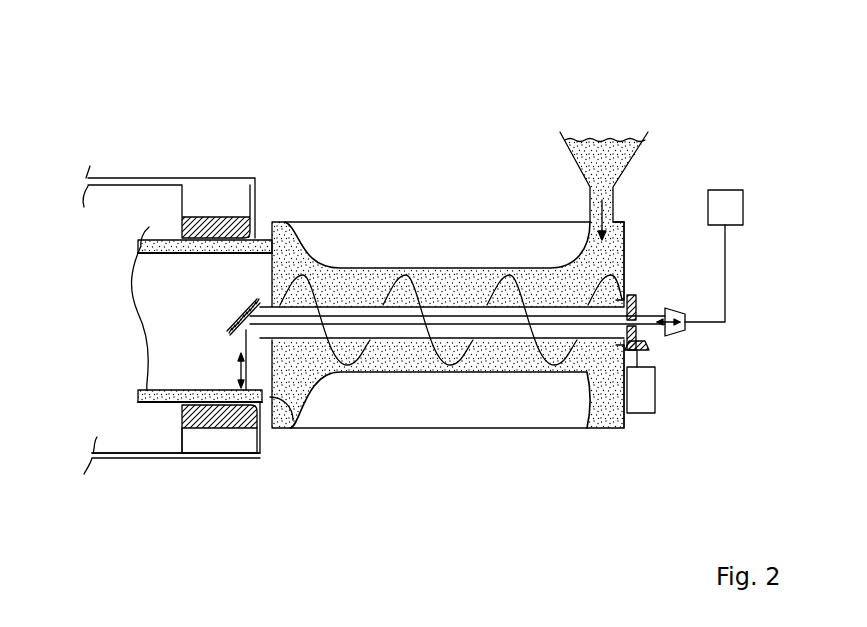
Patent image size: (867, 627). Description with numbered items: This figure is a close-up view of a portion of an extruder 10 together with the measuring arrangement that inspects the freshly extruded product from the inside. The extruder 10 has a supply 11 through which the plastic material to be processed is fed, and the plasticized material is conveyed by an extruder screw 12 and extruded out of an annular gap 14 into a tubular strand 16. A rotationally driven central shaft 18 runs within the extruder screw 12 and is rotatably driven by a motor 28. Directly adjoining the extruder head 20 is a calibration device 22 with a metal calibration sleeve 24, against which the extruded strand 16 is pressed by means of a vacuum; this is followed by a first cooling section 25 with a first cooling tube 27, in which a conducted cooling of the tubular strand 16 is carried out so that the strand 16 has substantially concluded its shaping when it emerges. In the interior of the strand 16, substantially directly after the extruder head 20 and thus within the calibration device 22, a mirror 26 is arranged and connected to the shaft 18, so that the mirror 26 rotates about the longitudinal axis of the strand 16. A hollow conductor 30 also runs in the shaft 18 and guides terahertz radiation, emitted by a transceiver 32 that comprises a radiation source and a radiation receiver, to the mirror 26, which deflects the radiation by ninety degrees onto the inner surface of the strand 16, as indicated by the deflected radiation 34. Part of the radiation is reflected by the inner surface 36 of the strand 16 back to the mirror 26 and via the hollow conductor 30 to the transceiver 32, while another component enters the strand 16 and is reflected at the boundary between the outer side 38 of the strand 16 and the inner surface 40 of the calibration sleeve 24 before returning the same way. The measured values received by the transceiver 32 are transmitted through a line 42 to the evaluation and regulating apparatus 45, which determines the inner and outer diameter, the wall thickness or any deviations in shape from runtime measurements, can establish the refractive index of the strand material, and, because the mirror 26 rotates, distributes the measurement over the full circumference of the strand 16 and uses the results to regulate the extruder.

The extruder 10 is at (444, 212).
The supply 11 is at (629, 157).
The extruder screw 12 is at (535, 345).
The annular gap 14 is at (293, 420).
The tubular strand 16 is at (158, 245).
The central shaft 18 is at (590, 330).
The extruder head 20 is at (286, 235).
The calibration device 22 is at (223, 205).
The calibration sleeve 24 is at (203, 408).
The first cooling section 25 is at (109, 148).
The mirror 26 is at (240, 320).
The first cooling tube 27 is at (125, 455).
The motor 28 is at (652, 394).
The hollow conductor 30 is at (403, 327).
The transceiver 32 is at (667, 308).
The deflected terahertz radiation 34 is at (222, 383).
The inner surface 36 is at (148, 388).
The outer side 38 is at (140, 403).
The inner surface of the calibration sleeve 40 is at (197, 390).
The line 42 is at (727, 302).
The evaluation and regulating apparatus 45 is at (717, 216).